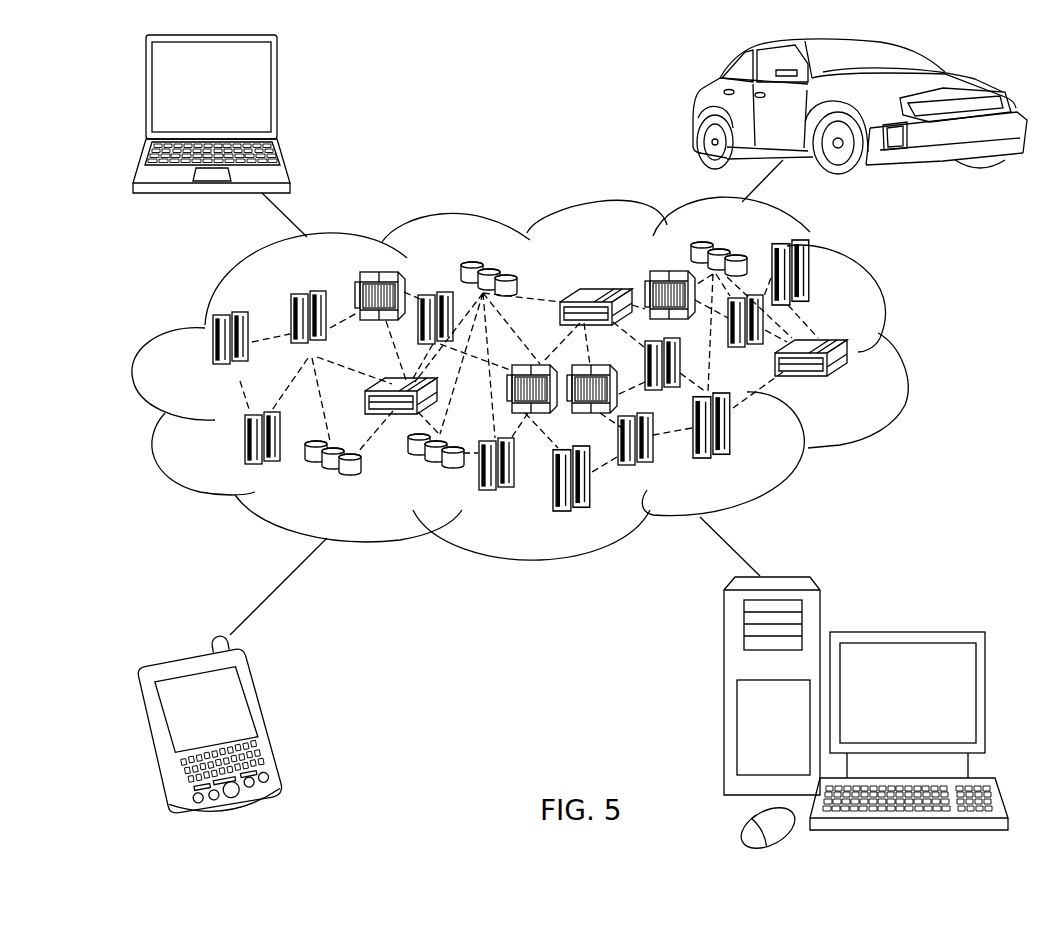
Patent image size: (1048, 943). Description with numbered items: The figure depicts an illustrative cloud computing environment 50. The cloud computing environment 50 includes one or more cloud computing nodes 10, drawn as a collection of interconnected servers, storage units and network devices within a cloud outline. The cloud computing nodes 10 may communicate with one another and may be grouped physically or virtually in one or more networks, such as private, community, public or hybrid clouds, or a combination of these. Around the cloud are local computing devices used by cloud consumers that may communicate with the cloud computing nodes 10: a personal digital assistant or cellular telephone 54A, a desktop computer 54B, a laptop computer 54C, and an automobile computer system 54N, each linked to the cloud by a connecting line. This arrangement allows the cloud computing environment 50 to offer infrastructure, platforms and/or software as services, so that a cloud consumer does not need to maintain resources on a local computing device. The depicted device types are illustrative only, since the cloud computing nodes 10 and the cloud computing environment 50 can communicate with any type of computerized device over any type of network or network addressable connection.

The laptop computer 54C is at (277, 92).
The automobile computer system 54N is at (697, 110).
The personal digital assistant (PDA) or cellular telephone 54A is at (268, 718).
The desktop computer 54B is at (905, 632).
The cloud computing environment 50 is at (908, 355).
The cloud computing nodes 10 is at (852, 385).